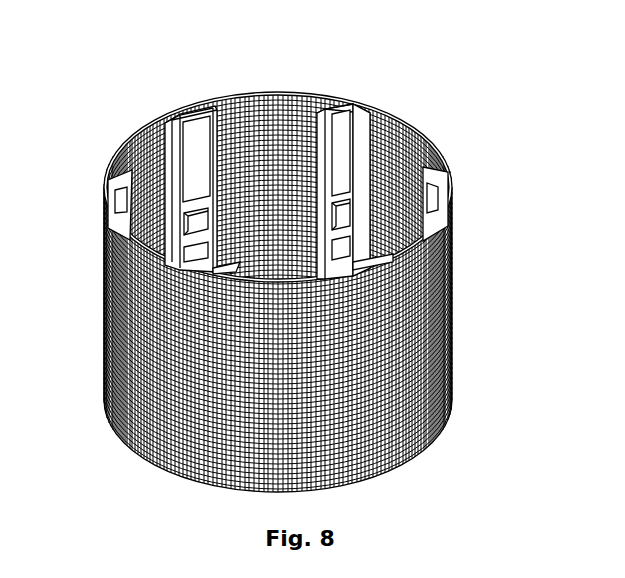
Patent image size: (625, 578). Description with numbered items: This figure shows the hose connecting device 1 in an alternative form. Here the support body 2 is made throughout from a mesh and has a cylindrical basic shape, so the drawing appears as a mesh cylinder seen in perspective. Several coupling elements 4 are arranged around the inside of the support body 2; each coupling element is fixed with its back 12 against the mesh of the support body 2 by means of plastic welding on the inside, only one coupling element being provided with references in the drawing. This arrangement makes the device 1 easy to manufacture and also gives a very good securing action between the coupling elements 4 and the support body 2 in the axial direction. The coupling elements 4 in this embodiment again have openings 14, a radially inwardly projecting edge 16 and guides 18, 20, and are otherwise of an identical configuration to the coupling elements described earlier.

The device 1 is at (475, 134).
The support body 2 is at (443, 297).
The coupling elements 4 is at (194, 110).
The back 12 is at (200, 370).
The openings 14 is at (331, 210).
The radially inwardly projecting edge 16 is at (360, 190).
The guide 18 is at (345, 120).
The guide 20 is at (348, 245).